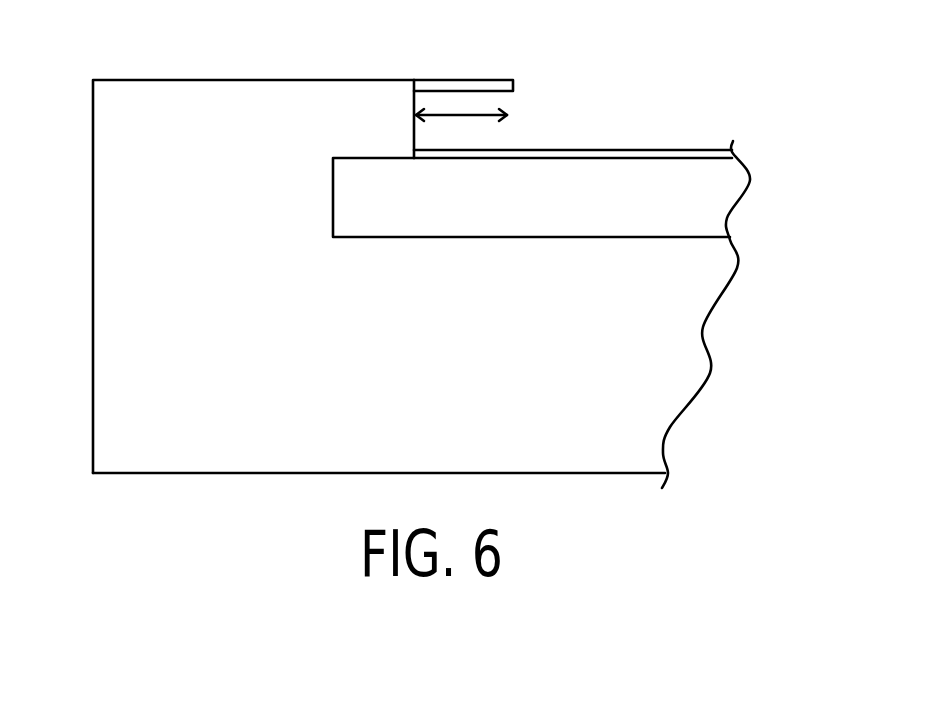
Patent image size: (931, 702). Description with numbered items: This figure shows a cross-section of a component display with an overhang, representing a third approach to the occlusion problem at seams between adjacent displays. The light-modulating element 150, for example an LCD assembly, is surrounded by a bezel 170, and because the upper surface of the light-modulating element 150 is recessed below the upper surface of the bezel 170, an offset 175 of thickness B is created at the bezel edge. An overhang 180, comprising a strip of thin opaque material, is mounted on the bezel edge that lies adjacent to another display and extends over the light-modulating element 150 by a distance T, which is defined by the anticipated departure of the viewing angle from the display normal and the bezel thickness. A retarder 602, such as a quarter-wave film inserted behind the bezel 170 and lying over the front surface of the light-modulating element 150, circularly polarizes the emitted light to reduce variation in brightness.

The bezel 170 is at (160, 97).
The offset 175 is at (412, 121).
The overhang 180 is at (462, 79).
The distance T is at (492, 110).
The retarder 602 is at (665, 145).
The light-modulating element 150 is at (577, 190).